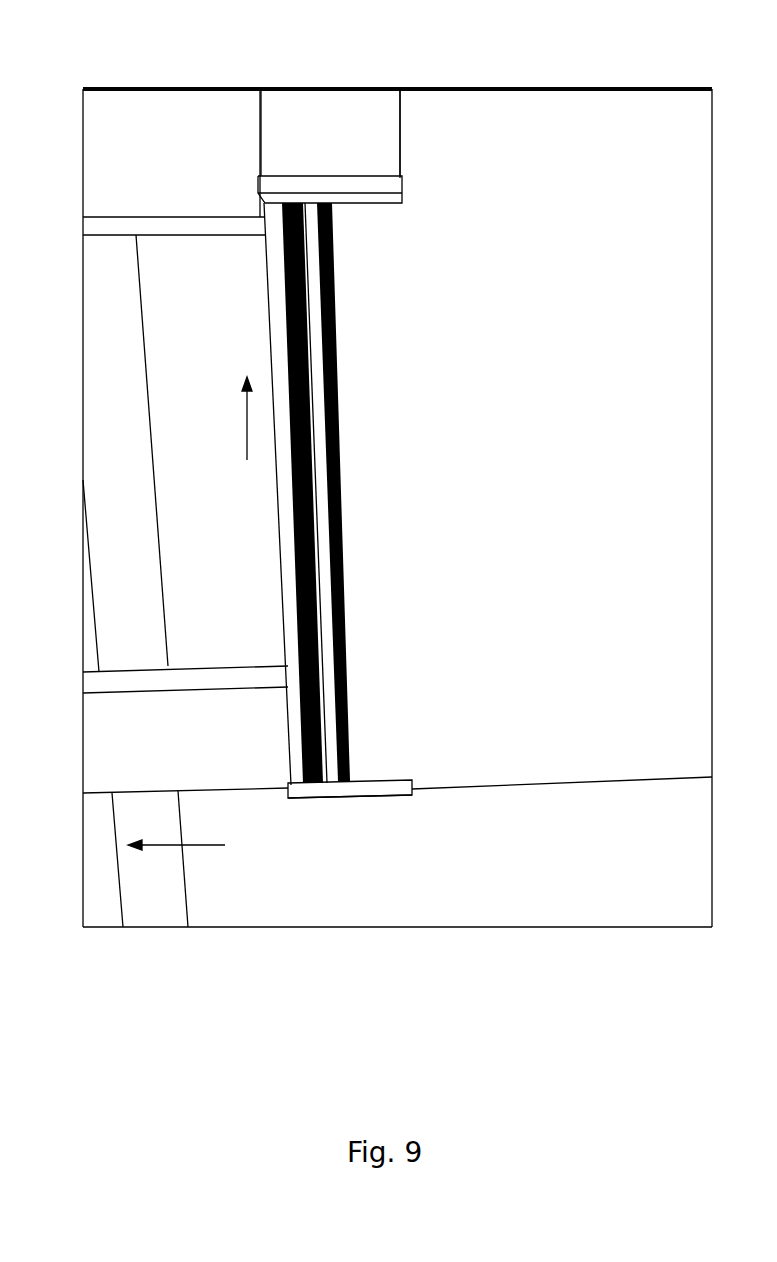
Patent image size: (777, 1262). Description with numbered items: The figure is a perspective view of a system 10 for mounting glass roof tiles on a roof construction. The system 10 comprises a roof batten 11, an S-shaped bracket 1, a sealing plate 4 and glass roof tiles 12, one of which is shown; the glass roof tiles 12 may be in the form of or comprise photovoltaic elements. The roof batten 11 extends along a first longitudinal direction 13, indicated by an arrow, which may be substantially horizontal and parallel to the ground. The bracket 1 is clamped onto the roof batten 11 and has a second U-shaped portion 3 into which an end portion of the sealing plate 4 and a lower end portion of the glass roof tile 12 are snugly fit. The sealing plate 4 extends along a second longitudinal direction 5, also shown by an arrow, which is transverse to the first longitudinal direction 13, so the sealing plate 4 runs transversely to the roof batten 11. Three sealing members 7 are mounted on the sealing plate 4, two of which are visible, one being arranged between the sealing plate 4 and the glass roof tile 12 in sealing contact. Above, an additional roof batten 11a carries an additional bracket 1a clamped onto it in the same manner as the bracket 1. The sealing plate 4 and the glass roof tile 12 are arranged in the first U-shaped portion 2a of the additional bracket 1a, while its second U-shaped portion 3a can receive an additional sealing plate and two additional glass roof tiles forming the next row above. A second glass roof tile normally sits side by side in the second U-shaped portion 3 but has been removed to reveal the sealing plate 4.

The S-shaped bracket 1 is at (366, 792).
The additional bracket 1a is at (313, 107).
The first U-shaped portion of the additional bracket 2a is at (401, 132).
The second U-shaped portion 3 is at (290, 785).
The second U-shaped portion of the additional bracket 3a is at (268, 178).
The sealing plate 4 is at (273, 353).
The second longitudinal direction 5 is at (247, 438).
The sealing member 7 is at (335, 488).
The system 10 is at (303, 895).
The roof batten 11 is at (127, 758).
The additional roof batten 11a is at (128, 122).
The glass roof tile 12 is at (457, 767).
The first longitudinal direction 13 is at (178, 847).